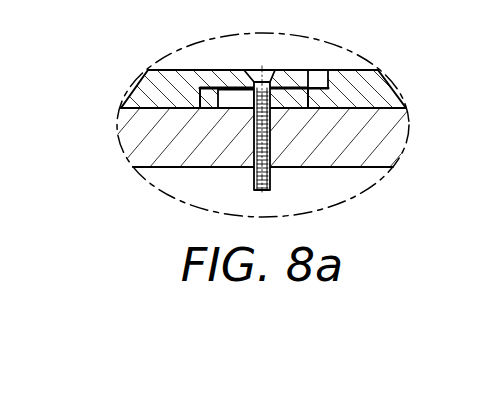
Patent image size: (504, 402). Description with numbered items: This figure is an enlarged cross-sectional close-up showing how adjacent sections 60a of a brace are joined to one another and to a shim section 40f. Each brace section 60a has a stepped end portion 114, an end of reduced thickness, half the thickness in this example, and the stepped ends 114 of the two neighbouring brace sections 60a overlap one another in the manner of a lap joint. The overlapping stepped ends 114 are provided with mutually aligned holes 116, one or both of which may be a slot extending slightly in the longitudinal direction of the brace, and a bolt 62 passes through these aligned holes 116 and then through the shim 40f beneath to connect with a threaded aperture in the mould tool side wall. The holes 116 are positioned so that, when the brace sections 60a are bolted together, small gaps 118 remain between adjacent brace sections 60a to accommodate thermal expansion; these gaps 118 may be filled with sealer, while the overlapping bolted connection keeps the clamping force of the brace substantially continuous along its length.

The brace section 60a is at (145, 88).
The shim section 40f is at (393, 140).
The bolt 62 is at (253, 180).
The stepped end portion 114 is at (298, 100).
The gap 118 is at (206, 86).
The hole 116 is at (253, 76).